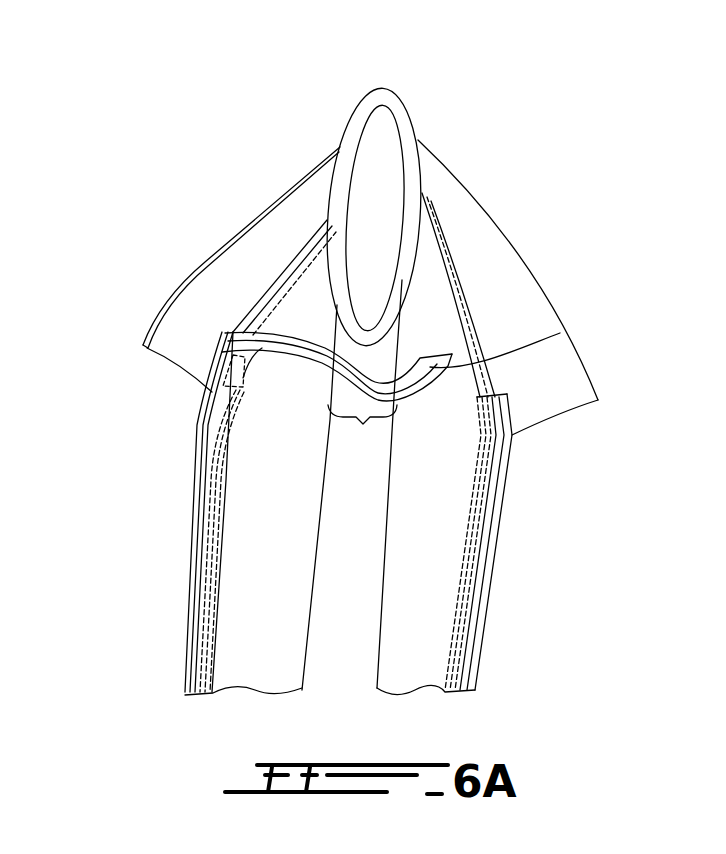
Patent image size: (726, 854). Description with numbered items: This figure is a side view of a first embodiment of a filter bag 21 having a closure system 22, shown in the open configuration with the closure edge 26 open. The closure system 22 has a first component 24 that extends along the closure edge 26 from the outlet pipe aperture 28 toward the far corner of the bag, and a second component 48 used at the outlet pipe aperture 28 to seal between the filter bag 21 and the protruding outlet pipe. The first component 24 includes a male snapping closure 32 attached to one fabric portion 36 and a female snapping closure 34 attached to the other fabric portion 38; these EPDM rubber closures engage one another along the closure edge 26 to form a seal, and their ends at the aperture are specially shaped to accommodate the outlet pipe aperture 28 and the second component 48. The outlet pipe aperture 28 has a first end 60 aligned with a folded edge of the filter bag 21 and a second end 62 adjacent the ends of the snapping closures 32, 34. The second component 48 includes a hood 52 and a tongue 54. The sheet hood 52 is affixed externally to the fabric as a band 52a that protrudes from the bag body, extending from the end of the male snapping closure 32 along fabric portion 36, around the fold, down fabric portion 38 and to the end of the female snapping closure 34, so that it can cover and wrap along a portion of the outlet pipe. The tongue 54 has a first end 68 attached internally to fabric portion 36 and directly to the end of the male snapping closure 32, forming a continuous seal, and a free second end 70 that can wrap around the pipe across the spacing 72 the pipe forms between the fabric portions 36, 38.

The filter bag 21 is at (549, 256).
The closure system 22 is at (578, 411).
The first component 24 is at (547, 542).
The closure edge 26 is at (482, 640).
The outlet pipe aperture 28 is at (413, 199).
The male snapping closure 32 is at (188, 632).
The female snapping closure 34 is at (482, 588).
The fabric portion 36 is at (263, 542).
The fabric portion 38 is at (450, 473).
The second component 48 is at (213, 242).
The hood 52 is at (224, 276).
The band 52a is at (273, 233).
The tongue 54 is at (296, 350).
The first end 60 is at (340, 147).
The second end 62 is at (553, 388).
The first end 68 is at (243, 377).
The free second end 70 is at (560, 333).
The spacing 72 is at (362, 433).